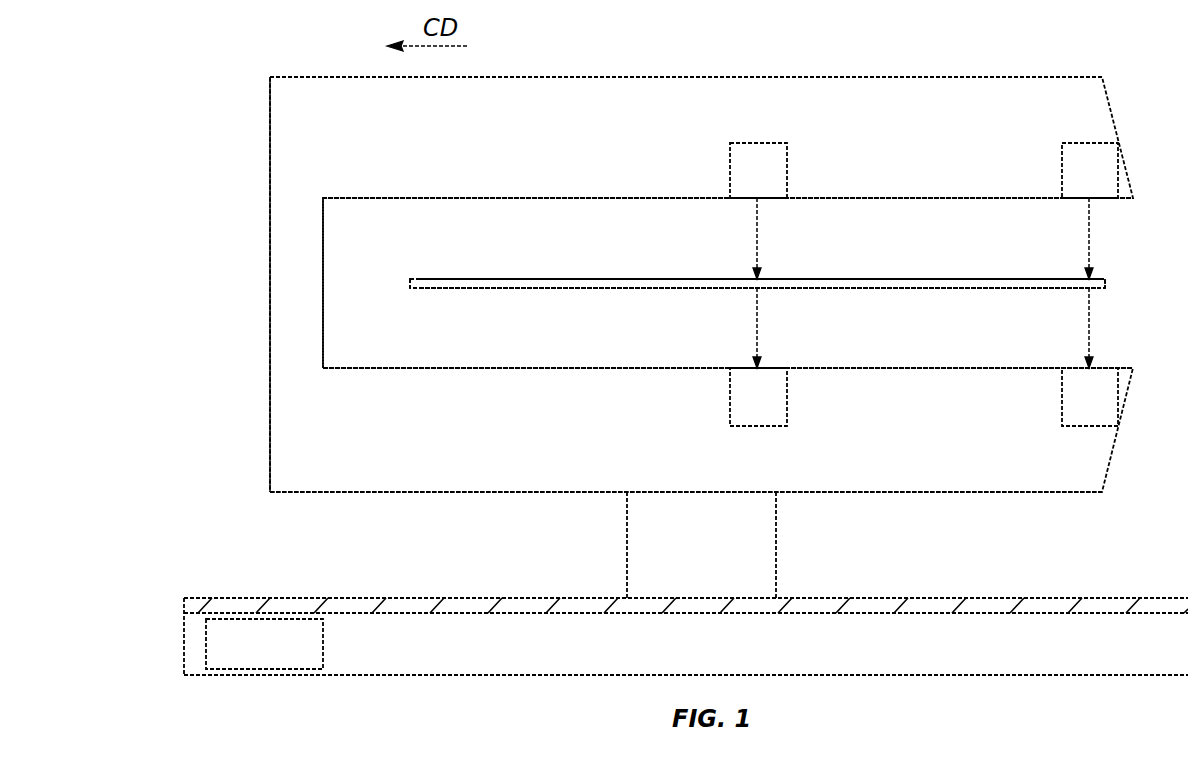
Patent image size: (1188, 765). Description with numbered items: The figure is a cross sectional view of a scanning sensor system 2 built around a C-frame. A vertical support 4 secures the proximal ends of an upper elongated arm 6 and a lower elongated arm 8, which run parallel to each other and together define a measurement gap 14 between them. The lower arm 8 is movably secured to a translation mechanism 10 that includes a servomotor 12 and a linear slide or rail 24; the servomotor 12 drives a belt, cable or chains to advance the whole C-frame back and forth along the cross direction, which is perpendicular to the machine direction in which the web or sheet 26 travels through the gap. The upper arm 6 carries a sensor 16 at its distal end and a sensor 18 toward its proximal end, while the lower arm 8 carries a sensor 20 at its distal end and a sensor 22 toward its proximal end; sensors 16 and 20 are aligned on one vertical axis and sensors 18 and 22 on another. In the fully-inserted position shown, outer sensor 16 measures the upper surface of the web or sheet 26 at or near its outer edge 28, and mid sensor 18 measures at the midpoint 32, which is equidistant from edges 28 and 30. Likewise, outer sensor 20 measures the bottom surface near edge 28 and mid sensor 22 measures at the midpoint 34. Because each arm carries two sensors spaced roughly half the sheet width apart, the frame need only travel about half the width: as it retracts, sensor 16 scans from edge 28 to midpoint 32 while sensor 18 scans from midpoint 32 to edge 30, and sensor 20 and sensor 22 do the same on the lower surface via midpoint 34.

The scanning sensor system 2 is at (250, 302).
The vertical support 4 is at (304, 294).
The upper elongated arm 6 is at (621, 155).
The lower elongated arm 8 is at (621, 438).
The translation mechanism 10 is at (727, 658).
The servomotor 12 is at (274, 656).
The measurement gap 14 is at (457, 342).
The sensor 16 is at (1062, 157).
The sensor 18 is at (787, 155).
The sensor 20 is at (1062, 397).
The sensor 22 is at (787, 396).
The linear slide or rail 24 is at (1040, 598).
The web or sheet 26 is at (580, 284).
The outer edge 28 is at (1105, 281).
The edge 30 is at (410, 280).
The midpoint 32 is at (742, 269).
The midpoint 34 is at (743, 299).